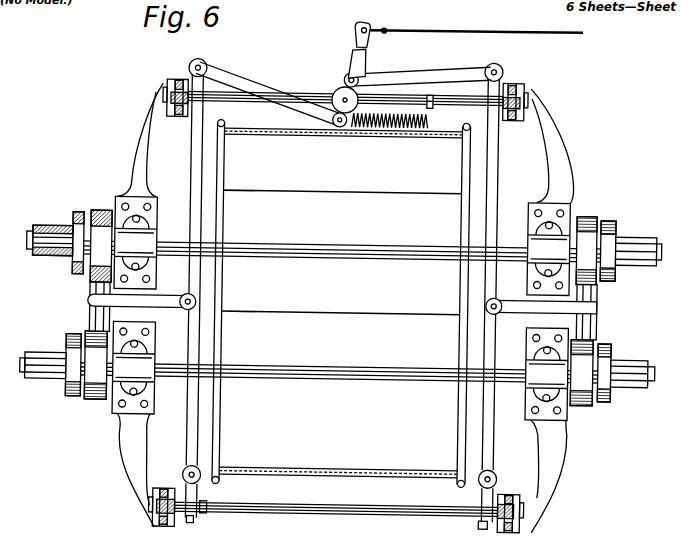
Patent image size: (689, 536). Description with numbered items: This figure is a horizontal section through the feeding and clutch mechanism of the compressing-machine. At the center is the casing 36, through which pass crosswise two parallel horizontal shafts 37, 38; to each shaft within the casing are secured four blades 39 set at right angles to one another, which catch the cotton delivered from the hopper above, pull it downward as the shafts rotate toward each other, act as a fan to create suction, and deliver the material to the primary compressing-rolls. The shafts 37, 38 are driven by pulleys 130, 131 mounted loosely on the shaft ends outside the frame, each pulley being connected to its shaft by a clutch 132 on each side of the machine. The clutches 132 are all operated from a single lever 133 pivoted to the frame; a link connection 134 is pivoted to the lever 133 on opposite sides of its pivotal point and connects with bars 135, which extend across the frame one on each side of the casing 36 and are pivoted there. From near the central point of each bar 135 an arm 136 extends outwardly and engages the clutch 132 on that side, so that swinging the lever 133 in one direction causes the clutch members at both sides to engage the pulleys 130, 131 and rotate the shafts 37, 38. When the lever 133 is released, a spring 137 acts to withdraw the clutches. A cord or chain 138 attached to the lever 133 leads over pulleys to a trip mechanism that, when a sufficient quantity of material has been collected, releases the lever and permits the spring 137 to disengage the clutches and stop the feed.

The casing 36 is at (341, 308).
The shaft 37 is at (170, 239).
The shaft 38 is at (168, 363).
The blades 39 is at (340, 302).
The pulley 130 is at (345, 357).
The pulley 131 is at (347, 245).
The clutch 132 is at (343, 308).
The lever 133 is at (353, 62).
The link connection 134 is at (282, 93).
The bar 135 is at (191, 163).
The arm 136 is at (163, 304).
The spring 137 is at (408, 114).
The cord or chain 138 is at (476, 21).